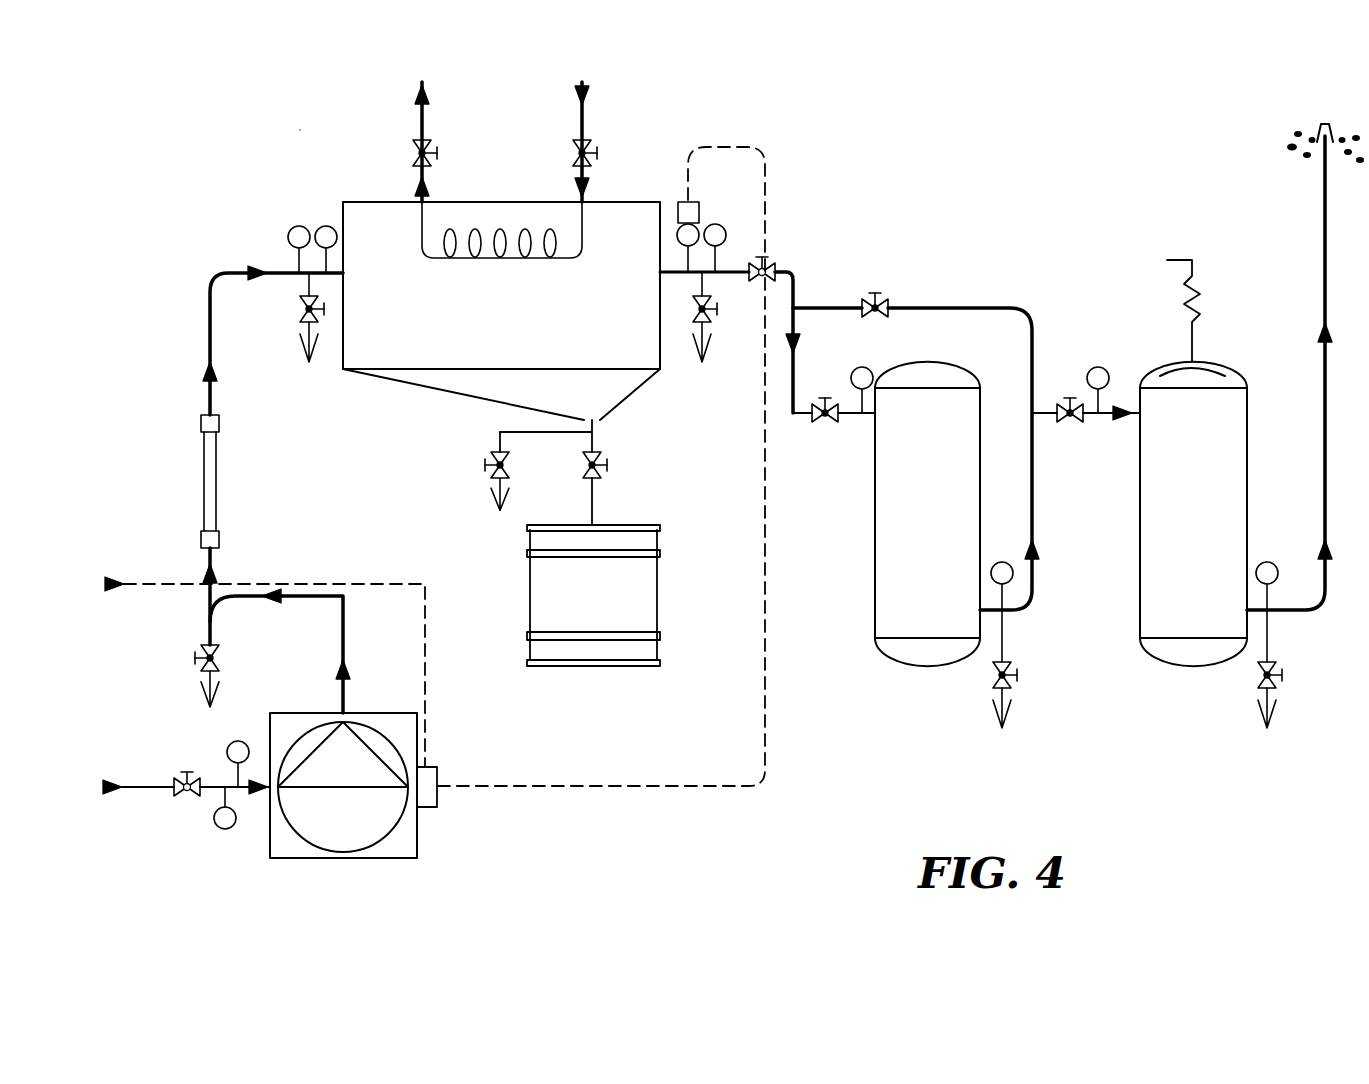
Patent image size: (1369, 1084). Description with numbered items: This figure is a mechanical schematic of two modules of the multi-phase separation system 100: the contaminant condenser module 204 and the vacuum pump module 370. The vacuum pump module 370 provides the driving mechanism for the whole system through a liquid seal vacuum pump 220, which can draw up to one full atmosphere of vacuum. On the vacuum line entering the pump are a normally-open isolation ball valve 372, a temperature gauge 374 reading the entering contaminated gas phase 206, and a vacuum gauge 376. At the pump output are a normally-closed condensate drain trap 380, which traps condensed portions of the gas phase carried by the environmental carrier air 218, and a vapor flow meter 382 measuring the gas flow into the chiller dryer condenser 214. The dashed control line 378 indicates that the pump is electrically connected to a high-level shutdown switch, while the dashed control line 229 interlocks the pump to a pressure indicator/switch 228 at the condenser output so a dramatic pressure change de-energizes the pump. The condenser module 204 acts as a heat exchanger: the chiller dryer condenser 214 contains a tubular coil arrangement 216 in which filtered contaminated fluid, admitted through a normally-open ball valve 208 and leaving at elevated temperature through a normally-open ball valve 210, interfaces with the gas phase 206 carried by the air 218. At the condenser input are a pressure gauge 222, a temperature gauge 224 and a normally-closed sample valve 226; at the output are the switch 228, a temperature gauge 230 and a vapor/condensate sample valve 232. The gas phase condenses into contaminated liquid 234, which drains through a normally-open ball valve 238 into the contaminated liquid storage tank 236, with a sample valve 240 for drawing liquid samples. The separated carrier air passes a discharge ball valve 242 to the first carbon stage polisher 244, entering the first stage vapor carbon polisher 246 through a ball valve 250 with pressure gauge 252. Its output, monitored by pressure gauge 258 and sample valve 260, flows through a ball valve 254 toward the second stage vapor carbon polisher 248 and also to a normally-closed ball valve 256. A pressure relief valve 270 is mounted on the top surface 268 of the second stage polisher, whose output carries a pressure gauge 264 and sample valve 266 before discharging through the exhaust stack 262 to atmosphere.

The multi-phase separation system 100 is at (298, 126).
The contaminant condenser module 204 is at (620, 185).
The contaminated gas phase 206 is at (208, 300).
The normally-open ball valve 208 is at (592, 150).
The normally-open ball valve 210 is at (432, 150).
The chiller dryer condenser 214 is at (354, 200).
The tubular coil arrangement 216 is at (500, 240).
The environmental carrier air 218 is at (208, 340).
The liquid seal vacuum pump 220 is at (398, 822).
The pressure gauge 222 is at (287, 237).
The temperature gauge 224 is at (326, 224).
The normally-closed sample valve 226 is at (300, 327).
The pressure indicator/switch 228 is at (690, 200).
The dashed control line 229 is at (770, 182).
The temperature gauge 230 is at (720, 222).
The normally-closed vapor/condensate sample valve 232 is at (712, 330).
The contaminated liquid 234 is at (597, 505).
The contaminated liquid storage tank 236 is at (660, 594).
The normally-open ball valve 238 is at (603, 456).
The normally-closed vapor/condensate sample valve 240 is at (490, 478).
The normally-open discharge ball valve 242 is at (770, 260).
The first carbon stage polisher 244 is at (998, 282).
The first stage vapor carbon polisher 246 is at (880, 549).
The second stage vapor carbon polisher 248 is at (1140, 548).
The normally-open ball valve 250 is at (838, 425).
The pressure gauge 252 is at (868, 366).
The normally-open ball valve 254 is at (1066, 428).
The normally-closed ball valve 256 is at (885, 292).
The pressure gauge 258 is at (1010, 582).
The normally-closed vapor/condensate sample valve 260 is at (1016, 685).
The exhaust stack 262 is at (1323, 190).
The pressure gauge 264 is at (1272, 562).
The normally-closed vapor/condensate sample valve 266 is at (1282, 688).
The top surface 268 is at (1213, 360).
The pressure relief valve 270 is at (1185, 302).
The vacuum pump module 370 is at (336, 570).
The normally-open isolation ball valve 372 is at (165, 800).
The temperature gauge 374 is at (228, 830).
The vacuum gauge 376 is at (238, 740).
The dashed control line 378 is at (428, 702).
The normally-closed condensate drain trap 380 is at (200, 648).
The vapor flow meter 382 is at (200, 492).